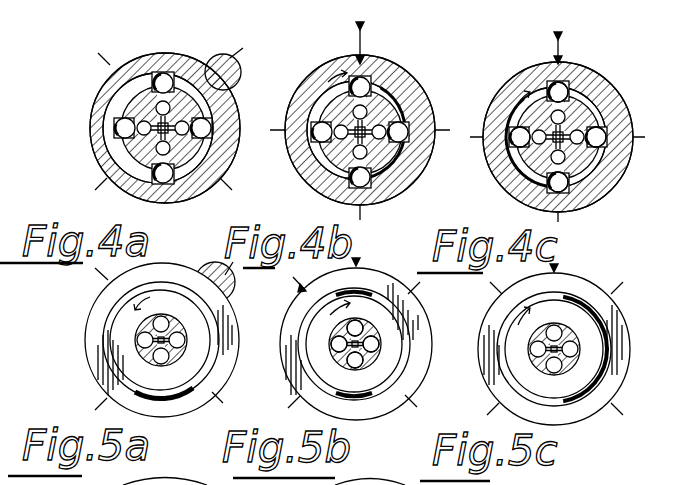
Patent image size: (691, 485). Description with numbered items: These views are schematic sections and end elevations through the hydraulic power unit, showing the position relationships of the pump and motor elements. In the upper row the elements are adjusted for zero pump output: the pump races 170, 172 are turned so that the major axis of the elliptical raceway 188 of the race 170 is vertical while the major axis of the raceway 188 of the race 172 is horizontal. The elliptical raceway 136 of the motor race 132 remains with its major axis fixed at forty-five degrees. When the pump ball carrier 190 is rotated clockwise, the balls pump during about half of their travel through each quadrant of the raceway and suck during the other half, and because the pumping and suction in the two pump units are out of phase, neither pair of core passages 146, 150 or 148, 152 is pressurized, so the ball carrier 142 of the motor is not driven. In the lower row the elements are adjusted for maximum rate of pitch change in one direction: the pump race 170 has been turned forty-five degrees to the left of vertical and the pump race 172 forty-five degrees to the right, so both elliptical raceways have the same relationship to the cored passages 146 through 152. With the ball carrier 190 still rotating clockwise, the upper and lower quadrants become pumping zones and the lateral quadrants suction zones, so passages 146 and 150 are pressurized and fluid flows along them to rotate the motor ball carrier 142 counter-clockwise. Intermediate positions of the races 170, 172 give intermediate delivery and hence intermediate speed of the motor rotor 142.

In FIG. 4A, the motor race 132 is at (168, 52).
In FIG. 4A, the elliptical raceway 136 is at (208, 162).
In FIG. 4A, the ball carrier 142 is at (120, 95).
In FIG. 5A, the ball carrier 142 is at (123, 320).
In FIG. 4C, the core passage 146 is at (583, 103).
In FIG. 5B, the core passage 146 is at (360, 323).
In FIG. 4C, the core passage 148 is at (590, 143).
In FIG. 5B, the core passage 148 is at (377, 348).
In FIG. 4C, the core passage 150 is at (610, 188).
In FIG. 5B, the core passage 150 is at (350, 367).
In FIG. 4C, the core passage 152 is at (537, 153).
In FIG. 5B, the core passage 152 is at (335, 340).
In FIG. 4B, the pump race 170 is at (348, 55).
In FIG. 5B, the pump race 170 is at (423, 338).
In FIG. 4C, the pump race 172 is at (542, 62).
In FIG. 5C, the pump race 172 is at (600, 298).
In FIG. 4B, the elliptical raceway 188 is at (383, 62).
In FIG. 4C, the elliptical raceway 188 is at (605, 104).
In FIG. 4B, the pump ball carrier 190 is at (325, 92).
In FIG. 4C, the pump ball carrier 190 is at (513, 100).
In FIG. 5B, the pump ball carrier 190 is at (325, 320).
In FIG. 5C, the pump ball carrier 190 is at (590, 377).